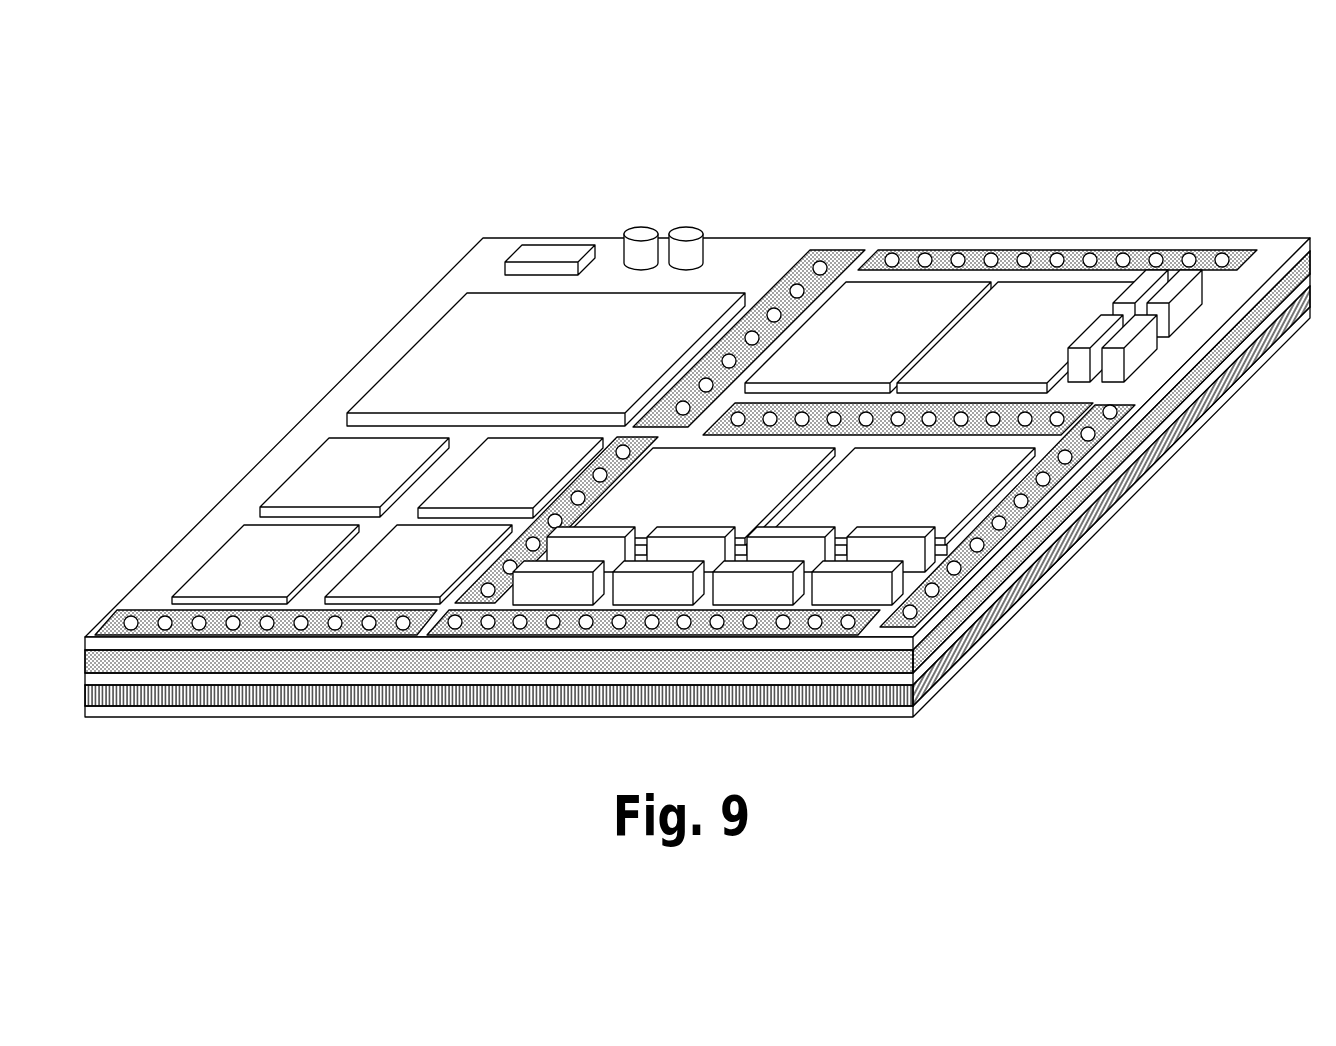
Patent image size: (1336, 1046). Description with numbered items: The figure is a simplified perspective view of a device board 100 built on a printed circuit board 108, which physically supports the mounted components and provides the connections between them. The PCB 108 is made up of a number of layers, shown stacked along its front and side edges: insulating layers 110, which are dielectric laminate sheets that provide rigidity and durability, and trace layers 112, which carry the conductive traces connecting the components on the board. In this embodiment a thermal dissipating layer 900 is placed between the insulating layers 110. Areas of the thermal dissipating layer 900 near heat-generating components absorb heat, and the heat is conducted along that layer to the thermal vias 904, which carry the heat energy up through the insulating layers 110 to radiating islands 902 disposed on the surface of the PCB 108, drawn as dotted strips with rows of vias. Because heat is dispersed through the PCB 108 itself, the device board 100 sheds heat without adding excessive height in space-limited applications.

The device board 100 is at (697, 389).
The printed circuit board 108 is at (1175, 463).
The insulating layers 110 is at (1080, 547).
The trace layers 112 is at (1124, 505).
The thermal dissipating layer 900 is at (697, 477).
The radiating islands 902 is at (833, 250).
The thermal vias 904 is at (938, 250).